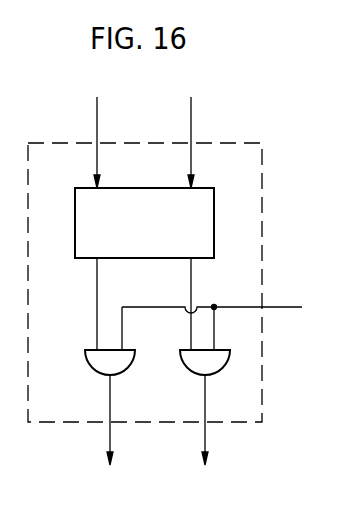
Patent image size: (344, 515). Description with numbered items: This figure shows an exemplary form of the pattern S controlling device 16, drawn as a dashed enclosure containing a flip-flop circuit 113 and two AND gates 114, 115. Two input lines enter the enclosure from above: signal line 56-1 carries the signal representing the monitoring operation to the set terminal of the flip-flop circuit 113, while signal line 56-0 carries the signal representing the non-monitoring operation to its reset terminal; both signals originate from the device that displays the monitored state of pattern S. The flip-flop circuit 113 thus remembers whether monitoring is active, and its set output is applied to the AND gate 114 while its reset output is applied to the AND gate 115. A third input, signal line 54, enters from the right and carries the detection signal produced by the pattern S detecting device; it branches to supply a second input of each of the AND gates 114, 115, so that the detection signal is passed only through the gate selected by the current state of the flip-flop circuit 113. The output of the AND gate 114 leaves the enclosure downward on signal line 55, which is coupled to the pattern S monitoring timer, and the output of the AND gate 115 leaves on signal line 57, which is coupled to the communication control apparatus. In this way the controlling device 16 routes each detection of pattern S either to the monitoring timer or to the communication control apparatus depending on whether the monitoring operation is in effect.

The pattern S controlling device 16 is at (264, 200).
The flip-flop circuit 113 is at (215, 198).
The signal line 56-0 is at (97, 125).
The signal line 56-1 is at (212, 114).
The signal line 54 is at (263, 307).
The AND gate 115 is at (135, 360).
The AND gate 114 is at (230, 360).
The signal line 57 is at (108, 449).
The signal line 55 is at (220, 430).